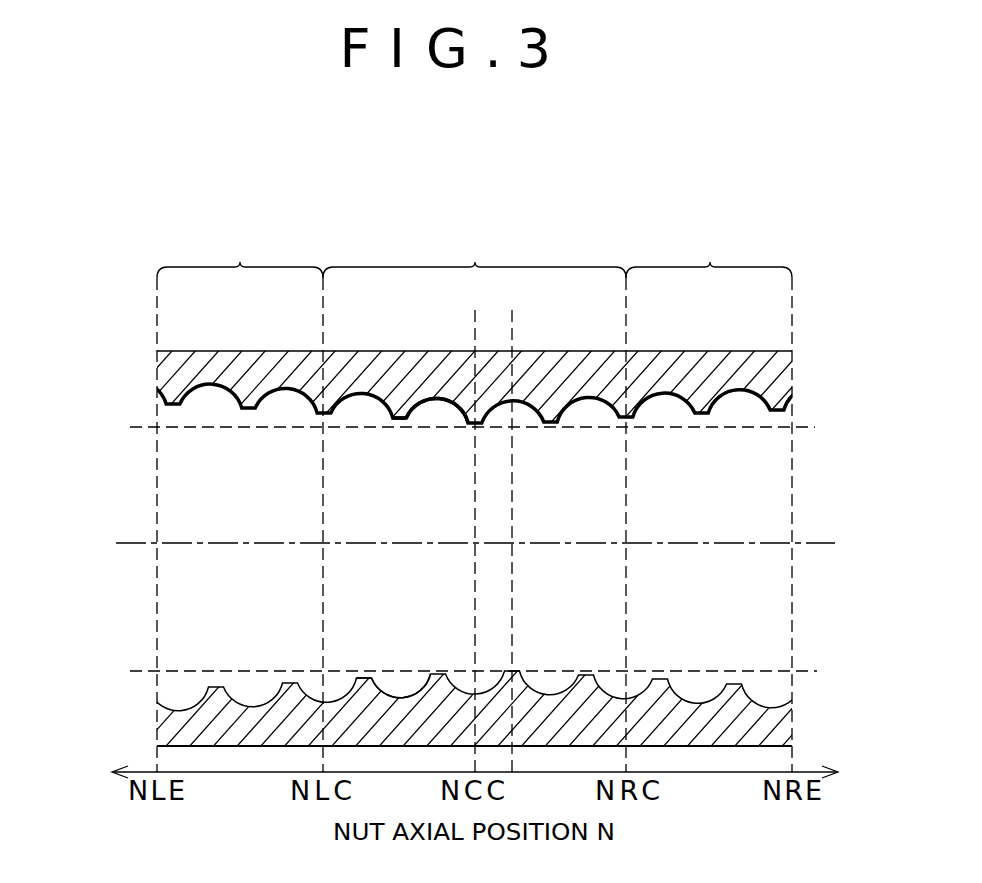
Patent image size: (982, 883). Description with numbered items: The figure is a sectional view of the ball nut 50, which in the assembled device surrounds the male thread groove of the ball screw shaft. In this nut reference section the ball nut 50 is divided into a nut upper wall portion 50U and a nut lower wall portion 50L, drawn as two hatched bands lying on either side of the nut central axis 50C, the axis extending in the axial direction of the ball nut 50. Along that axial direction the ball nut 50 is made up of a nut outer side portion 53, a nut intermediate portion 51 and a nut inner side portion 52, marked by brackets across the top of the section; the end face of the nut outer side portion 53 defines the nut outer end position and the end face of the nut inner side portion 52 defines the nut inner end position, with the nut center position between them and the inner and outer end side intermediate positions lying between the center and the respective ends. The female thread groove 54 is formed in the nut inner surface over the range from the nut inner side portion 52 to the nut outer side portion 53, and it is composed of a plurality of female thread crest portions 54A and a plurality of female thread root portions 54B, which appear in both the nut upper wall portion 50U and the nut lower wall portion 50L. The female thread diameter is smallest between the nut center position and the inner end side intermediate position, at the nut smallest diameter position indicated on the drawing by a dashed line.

The ball nut 50 is at (143, 347).
The nut upper wall portion 50U is at (166, 366).
The nut central axis 50C is at (445, 543).
The nut lower wall portion 50L is at (168, 724).
The nut intermediate portion 51 is at (474, 502).
The nut inner side portion 52 is at (709, 502).
The nut outer side portion 53 is at (240, 501).
The female thread groove 54 is at (710, 416).
The female thread crest portion 54A is at (390, 412).
The female thread root portion 54B is at (430, 414).